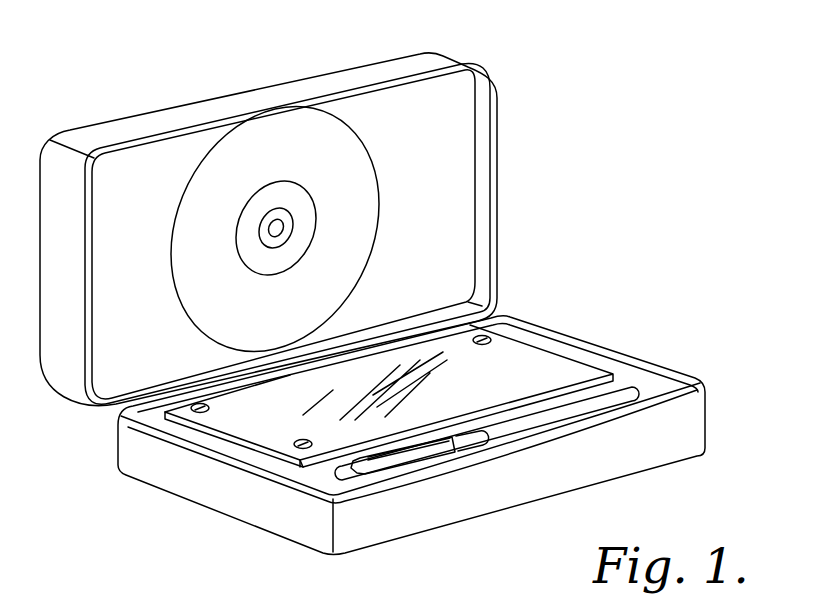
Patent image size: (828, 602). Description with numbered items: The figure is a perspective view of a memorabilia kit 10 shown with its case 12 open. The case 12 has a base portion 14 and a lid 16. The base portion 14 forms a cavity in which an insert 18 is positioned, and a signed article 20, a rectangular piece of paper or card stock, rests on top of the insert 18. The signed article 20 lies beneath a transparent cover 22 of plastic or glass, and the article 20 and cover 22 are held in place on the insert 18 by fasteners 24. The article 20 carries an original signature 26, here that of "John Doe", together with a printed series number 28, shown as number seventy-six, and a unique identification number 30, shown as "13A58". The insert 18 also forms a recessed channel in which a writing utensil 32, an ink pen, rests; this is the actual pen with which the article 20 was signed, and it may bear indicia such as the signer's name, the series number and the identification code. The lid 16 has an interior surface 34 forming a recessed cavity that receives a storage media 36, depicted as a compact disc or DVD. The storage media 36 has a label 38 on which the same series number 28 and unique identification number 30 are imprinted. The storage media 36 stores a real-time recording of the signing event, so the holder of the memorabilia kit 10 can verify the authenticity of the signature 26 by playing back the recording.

The memorabilia kit 10 is at (523, 68).
The case 12 is at (497, 163).
The base portion 14 is at (625, 355).
The lid 16 is at (497, 217).
The insert 18 is at (677, 392).
The signed article 20 is at (520, 343).
The transparent cover 22 is at (257, 428).
The fasteners 24 is at (193, 410).
The signature 26 is at (480, 392).
The series number 28 is at (286, 188).
The unique identification number 30 is at (258, 268).
The writing utensil 32 is at (602, 404).
The interior surface 34 is at (443, 190).
The storage media 36 is at (330, 143).
The label 38 is at (300, 227).